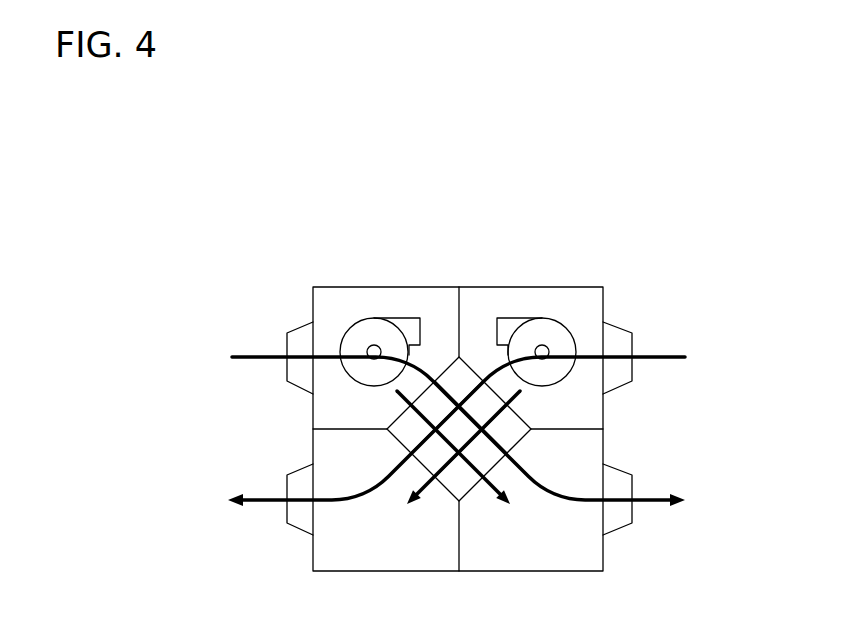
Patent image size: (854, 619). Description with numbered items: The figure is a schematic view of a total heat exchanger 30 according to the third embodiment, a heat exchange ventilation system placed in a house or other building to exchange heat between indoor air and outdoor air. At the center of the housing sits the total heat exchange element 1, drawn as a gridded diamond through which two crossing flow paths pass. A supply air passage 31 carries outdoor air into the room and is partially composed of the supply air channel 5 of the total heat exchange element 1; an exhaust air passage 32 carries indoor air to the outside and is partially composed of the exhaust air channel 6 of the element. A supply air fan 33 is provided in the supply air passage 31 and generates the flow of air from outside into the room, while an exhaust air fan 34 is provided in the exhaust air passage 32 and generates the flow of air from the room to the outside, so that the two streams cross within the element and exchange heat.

The total heat exchanger 30 is at (270, 240).
The total heat exchange element 1 is at (463, 378).
The supply air fan 33 is at (382, 330).
The exhaust air fan 34 is at (533, 330).
The supply air passage 31 is at (650, 497).
The exhaust air passage 32 is at (265, 497).
The supply air channel 5 is at (484, 470).
The exhaust air channel 6 is at (441, 466).